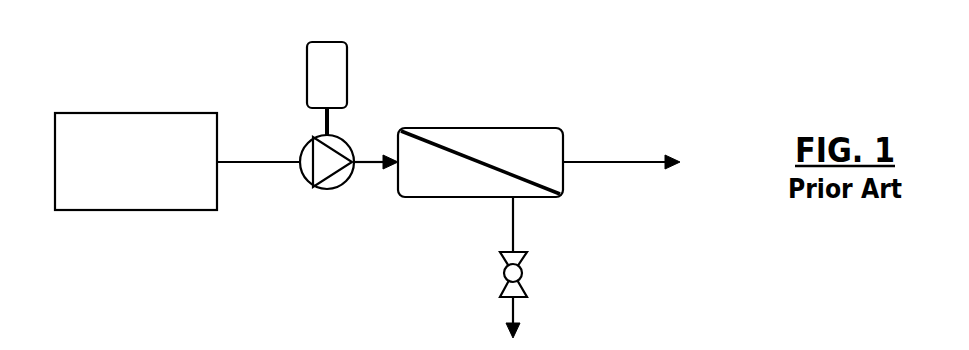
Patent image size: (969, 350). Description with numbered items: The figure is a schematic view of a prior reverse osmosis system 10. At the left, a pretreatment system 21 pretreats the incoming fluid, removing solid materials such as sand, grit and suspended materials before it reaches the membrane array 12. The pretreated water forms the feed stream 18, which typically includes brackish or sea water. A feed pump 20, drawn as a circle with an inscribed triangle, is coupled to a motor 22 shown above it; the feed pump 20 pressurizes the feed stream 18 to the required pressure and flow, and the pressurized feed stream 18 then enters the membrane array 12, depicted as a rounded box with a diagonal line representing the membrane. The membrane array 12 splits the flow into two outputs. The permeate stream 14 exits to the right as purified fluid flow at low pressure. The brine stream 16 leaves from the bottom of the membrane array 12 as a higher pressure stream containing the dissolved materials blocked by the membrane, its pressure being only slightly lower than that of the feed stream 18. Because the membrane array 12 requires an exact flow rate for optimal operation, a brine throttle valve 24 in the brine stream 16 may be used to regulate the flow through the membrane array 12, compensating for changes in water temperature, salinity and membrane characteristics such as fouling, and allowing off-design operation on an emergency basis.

The reverse osmosis system 10 is at (256, 88).
The membrane array 12 is at (490, 128).
The permeate stream 14 is at (597, 162).
The brine stream 16 is at (514, 229).
The feed stream 18 is at (369, 158).
The feed pump 20 is at (307, 180).
The pretreatment system 21 is at (85, 113).
The motor 22 is at (325, 42).
The brine throttle valve 24 is at (523, 272).